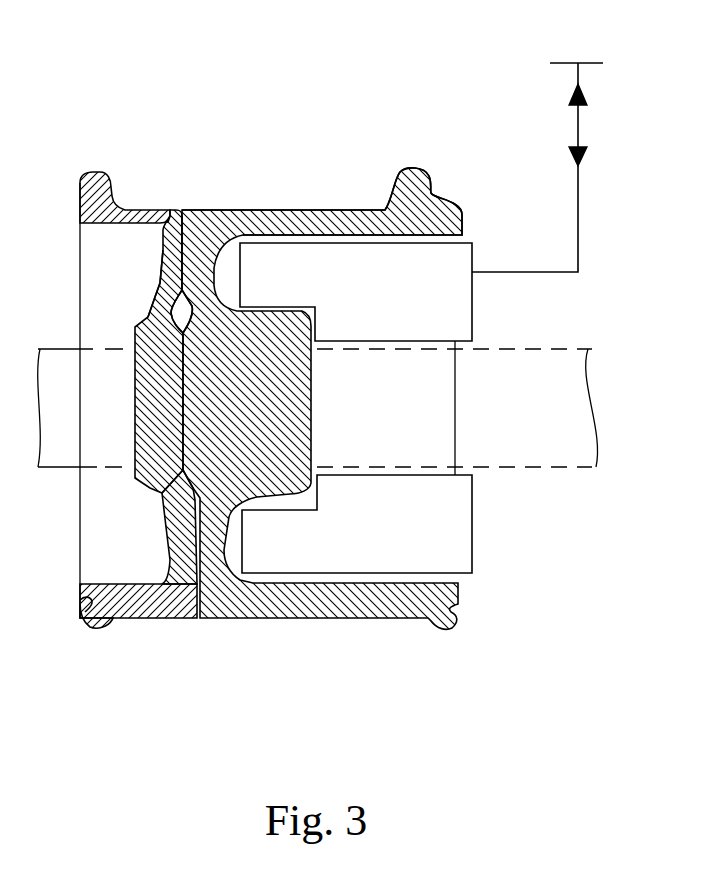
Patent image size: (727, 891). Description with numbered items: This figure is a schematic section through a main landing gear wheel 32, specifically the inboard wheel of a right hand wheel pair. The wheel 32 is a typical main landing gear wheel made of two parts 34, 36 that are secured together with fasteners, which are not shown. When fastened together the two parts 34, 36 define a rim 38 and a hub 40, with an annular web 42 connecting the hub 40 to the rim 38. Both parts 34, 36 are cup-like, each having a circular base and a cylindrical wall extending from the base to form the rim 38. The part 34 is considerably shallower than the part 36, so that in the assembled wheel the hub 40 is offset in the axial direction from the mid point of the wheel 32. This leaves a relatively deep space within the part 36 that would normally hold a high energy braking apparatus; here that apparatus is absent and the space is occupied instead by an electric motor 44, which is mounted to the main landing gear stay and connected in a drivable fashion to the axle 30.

The axle 30 is at (556, 348).
The main landing gear wheel 32 is at (96, 632).
The first wheel part 34 is at (164, 620).
The second wheel part 36 is at (246, 620).
The rim 38 is at (320, 210).
The hub 40 is at (133, 480).
The annular web 42 is at (158, 296).
The electric motor 44 is at (472, 522).